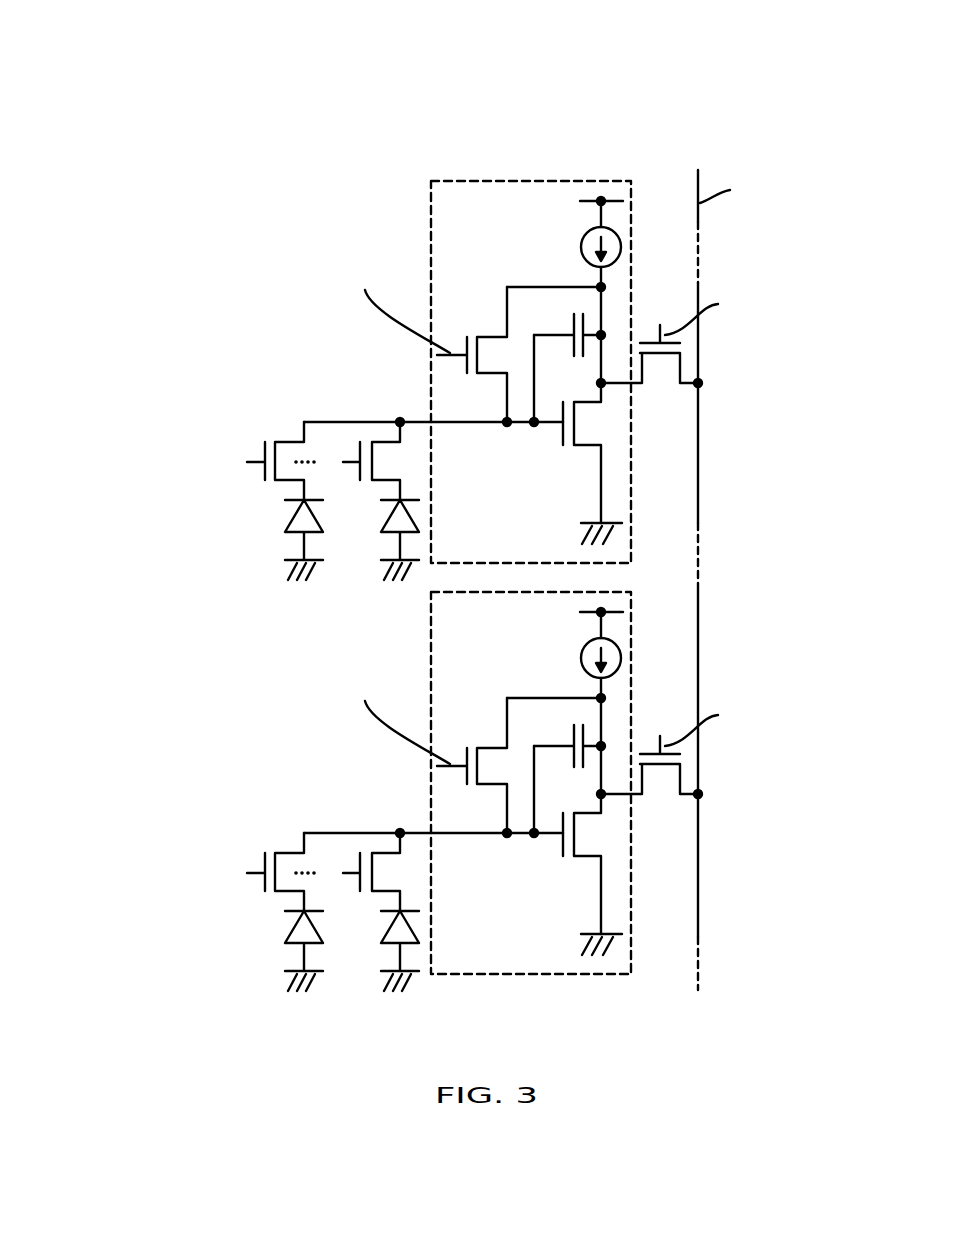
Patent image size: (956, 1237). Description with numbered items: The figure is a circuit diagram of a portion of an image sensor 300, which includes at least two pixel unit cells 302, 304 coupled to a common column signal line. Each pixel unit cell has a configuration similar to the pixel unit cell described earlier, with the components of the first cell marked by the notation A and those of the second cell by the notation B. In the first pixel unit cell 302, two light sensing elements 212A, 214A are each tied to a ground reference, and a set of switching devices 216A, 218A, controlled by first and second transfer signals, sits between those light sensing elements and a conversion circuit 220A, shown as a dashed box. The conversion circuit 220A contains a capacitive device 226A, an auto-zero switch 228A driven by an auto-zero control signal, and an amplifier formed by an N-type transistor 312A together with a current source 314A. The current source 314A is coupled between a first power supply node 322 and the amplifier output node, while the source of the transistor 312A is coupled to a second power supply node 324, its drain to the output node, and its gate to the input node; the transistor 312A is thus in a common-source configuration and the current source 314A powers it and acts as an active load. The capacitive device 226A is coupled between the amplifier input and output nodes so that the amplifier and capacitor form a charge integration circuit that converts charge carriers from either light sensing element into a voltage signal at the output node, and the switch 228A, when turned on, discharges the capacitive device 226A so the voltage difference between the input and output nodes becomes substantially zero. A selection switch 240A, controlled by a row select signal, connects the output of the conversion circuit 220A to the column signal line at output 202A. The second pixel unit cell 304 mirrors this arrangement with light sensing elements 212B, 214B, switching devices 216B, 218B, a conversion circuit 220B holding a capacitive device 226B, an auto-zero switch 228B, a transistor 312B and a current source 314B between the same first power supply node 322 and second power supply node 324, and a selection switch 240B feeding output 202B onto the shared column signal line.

The image sensor 300 is at (829, 92).
The pixel unit cell 302 is at (113, 423).
The pixel unit cell 304 is at (430, 812).
The first power supply node 322 is at (592, 202).
The second power supply node 324 is at (620, 525).
The current source 314A is at (617, 238).
The current source 314B is at (630, 647).
The switch 228A is at (492, 334).
The switch 228B is at (415, 752).
The capacitive device 226A is at (566, 332).
The capacitive device 226B is at (559, 735).
The switching device 218A is at (392, 461).
The switching device 218B is at (433, 833).
The N-type transistor 312A is at (585, 453).
The N-type transistor 312B is at (556, 864).
The selection switch 240A is at (655, 385).
The selection switch 240B is at (712, 779).
The pixel output 202A is at (702, 383).
The pixel output 202B is at (733, 784).
The conversion circuit 220A is at (631, 515).
The conversion circuit 220B is at (560, 812).
The switching device 216A is at (276, 483).
The switching device 216B is at (257, 877).
The light sensing element 212A is at (292, 521).
The light sensing element 212B is at (270, 951).
The light sensing element 214A is at (386, 526).
The light sensing element 214B is at (372, 951).